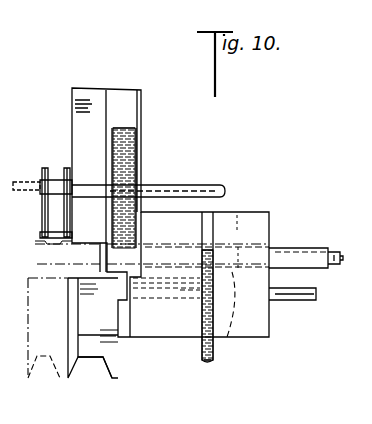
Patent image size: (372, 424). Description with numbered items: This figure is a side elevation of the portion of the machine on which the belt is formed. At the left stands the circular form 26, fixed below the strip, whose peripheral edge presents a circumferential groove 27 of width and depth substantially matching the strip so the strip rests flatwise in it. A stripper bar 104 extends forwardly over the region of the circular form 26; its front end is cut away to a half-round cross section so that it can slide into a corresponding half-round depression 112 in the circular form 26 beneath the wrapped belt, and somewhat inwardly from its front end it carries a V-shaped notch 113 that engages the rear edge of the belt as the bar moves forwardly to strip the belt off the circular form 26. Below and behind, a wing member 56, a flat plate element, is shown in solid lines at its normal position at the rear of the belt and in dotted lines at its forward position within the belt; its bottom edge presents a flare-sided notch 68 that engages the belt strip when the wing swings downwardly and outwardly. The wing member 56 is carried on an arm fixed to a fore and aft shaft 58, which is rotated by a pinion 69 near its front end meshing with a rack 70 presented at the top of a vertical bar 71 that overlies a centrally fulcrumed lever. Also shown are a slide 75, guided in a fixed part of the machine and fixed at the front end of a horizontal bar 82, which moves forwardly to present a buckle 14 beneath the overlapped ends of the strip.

The buckle 14 is at (142, 134).
The circular form 26 is at (42, 182).
The circumferential groove 27 is at (58, 178).
The wing member 56 is at (124, 349).
The fore and aft shaft 58 is at (290, 302).
The flare-sided notch 68 is at (105, 374).
The pinion 69 is at (224, 343).
The rack 70 is at (200, 325).
The vertical bar 71 is at (206, 364).
The slide 75 is at (281, 248).
The horizontal bar 82 is at (338, 250).
The stripper bar 104 is at (196, 186).
The half-round depression 112 is at (78, 182).
The V-shaped notch 113 is at (113, 171).